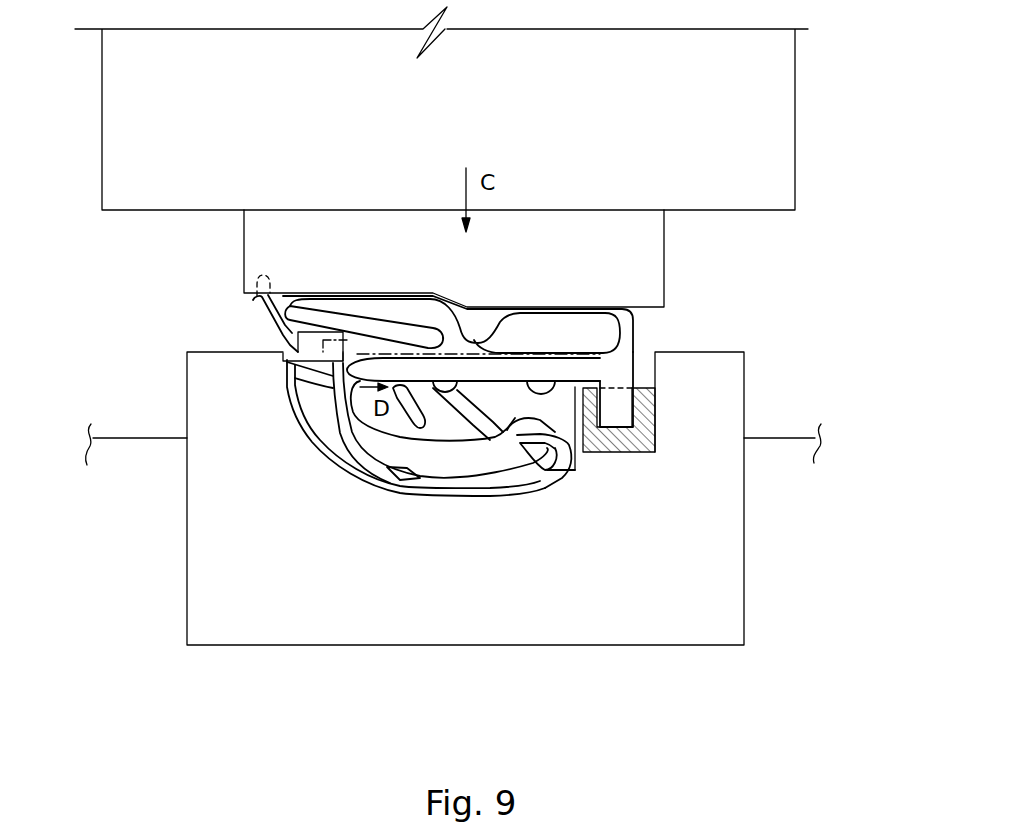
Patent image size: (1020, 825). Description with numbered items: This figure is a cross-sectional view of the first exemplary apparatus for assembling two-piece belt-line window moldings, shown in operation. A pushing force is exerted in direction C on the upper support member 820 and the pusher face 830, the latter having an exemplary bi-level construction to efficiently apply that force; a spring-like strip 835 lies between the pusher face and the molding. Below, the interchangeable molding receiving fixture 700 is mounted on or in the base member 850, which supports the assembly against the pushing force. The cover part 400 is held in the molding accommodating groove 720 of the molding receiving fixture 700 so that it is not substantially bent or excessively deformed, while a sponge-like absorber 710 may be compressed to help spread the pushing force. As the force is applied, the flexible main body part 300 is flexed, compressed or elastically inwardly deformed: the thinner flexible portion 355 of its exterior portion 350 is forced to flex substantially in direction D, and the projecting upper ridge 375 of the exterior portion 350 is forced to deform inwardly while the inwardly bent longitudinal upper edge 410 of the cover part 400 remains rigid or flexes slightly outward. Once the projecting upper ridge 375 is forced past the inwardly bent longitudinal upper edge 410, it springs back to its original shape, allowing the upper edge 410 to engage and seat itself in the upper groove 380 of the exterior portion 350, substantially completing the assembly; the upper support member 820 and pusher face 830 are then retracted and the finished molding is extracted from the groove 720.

The upper support member 820 is at (770, 57).
The pusher face 830 is at (648, 250).
The leaf spring strip 835 is at (650, 317).
The flexible main body part 300 is at (622, 367).
The sponge-like absorber 710 is at (655, 430).
The upper groove 380 is at (290, 366).
The base member 850 is at (160, 465).
The inwardly bent longitudinal upper edge 410 is at (313, 373).
The projecting upper ridge 375 is at (336, 400).
The thinner flexible portion 355 is at (347, 400).
The molding accommodating groove 720 is at (390, 493).
The exterior portion 350 is at (477, 463).
The cover part 400 is at (517, 493).
The molding receiving fixture 700 is at (690, 633).